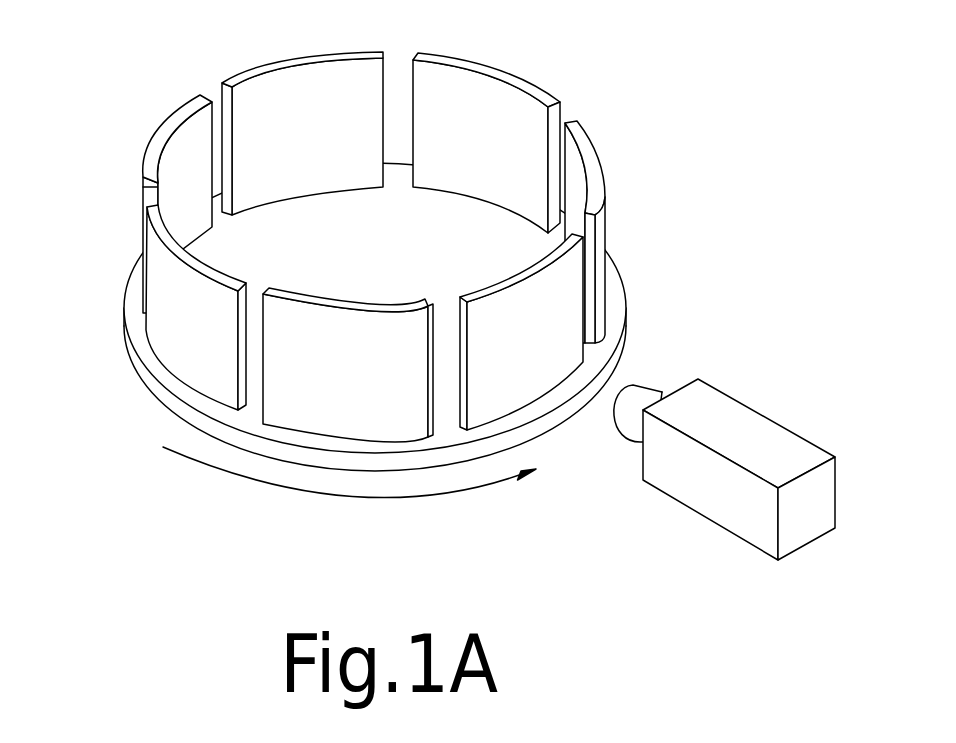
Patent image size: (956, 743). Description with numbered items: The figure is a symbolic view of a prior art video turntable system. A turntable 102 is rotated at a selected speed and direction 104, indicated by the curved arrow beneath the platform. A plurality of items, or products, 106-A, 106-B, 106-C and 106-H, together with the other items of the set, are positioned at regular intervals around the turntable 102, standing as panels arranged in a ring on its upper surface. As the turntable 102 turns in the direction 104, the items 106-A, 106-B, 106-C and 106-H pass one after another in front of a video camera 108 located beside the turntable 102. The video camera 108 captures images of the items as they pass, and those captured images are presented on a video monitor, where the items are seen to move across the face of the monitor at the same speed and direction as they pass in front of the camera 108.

The turntable 102 is at (145, 387).
The speed and direction 104 is at (230, 476).
The item 106-A is at (413, 320).
The item 106-B is at (167, 283).
The item 106-C is at (164, 130).
The item 106-H is at (563, 283).
The video camera 108 is at (750, 433).